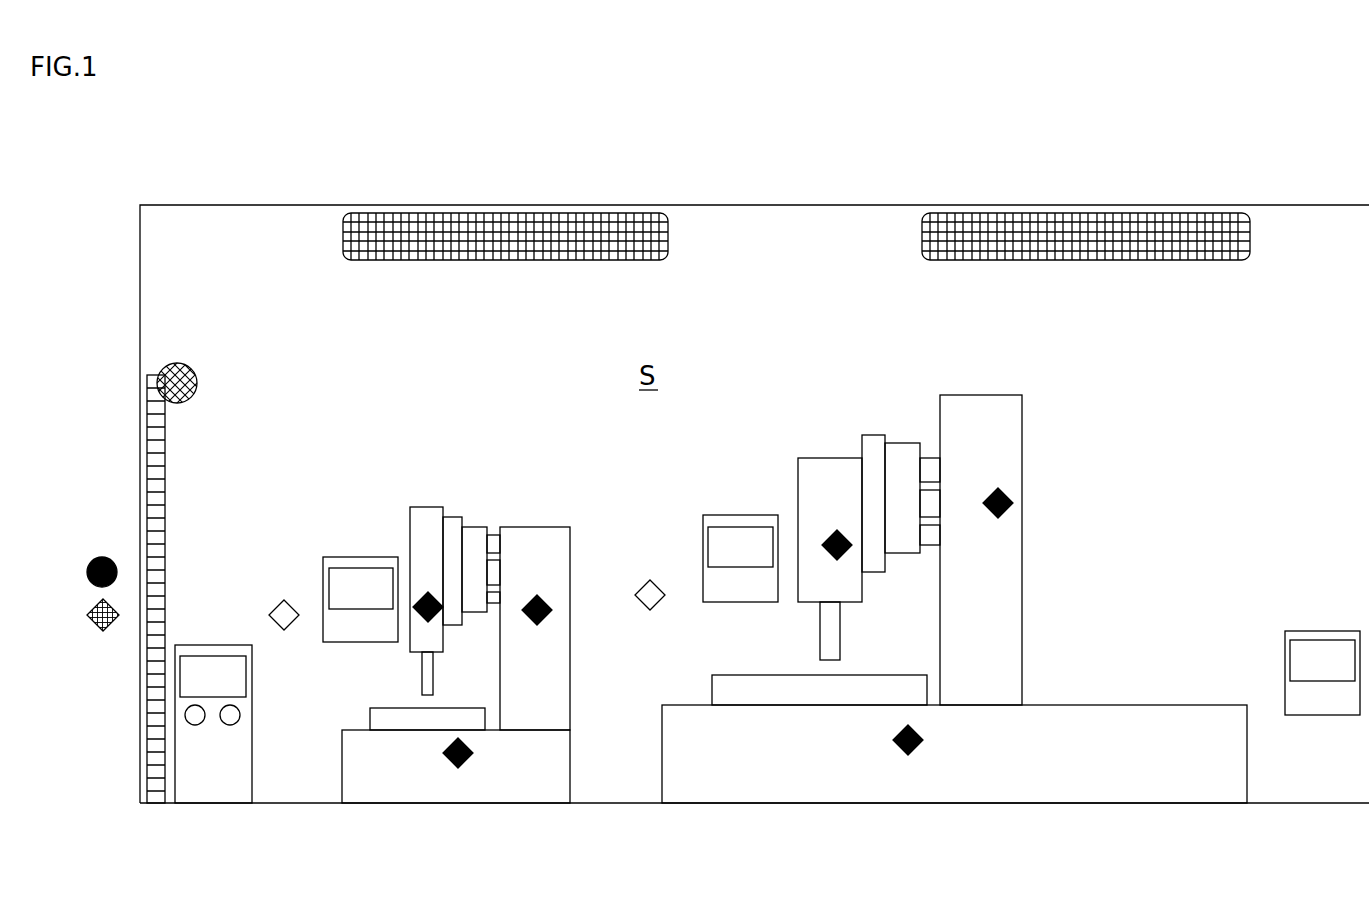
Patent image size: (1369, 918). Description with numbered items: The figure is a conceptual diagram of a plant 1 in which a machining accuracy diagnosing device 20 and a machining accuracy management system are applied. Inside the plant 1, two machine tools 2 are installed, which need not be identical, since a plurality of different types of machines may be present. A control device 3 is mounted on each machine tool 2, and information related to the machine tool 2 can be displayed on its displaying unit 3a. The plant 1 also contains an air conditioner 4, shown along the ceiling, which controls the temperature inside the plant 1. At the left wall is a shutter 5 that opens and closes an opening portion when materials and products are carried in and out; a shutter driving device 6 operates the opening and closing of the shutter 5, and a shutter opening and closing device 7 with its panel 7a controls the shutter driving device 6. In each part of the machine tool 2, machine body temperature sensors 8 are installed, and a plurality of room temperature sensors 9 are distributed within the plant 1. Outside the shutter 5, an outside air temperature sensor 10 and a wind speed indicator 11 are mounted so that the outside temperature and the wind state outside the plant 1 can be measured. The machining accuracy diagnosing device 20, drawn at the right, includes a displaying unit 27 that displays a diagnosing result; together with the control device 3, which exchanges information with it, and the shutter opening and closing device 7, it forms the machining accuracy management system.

The plant 1 is at (247, 228).
The machine tool 2 is at (385, 780).
The control device 3 is at (360, 593).
The displaying unit 3a is at (362, 600).
The air conditioner 4 is at (632, 222).
The shutter 5 is at (166, 536).
The shutter driving device 6 is at (190, 366).
The shutter opening and closing device 7 is at (213, 741).
The display 7a is at (210, 668).
The machine body temperature sensor 8 is at (428, 620).
The room temperature sensor 9 is at (284, 600).
The outside air temperature sensor 10 is at (103, 632).
The wind speed indicator 11 is at (102, 557).
The machining accuracy diagnosing device 20 is at (1297, 643).
The displaying unit 27 is at (1292, 660).